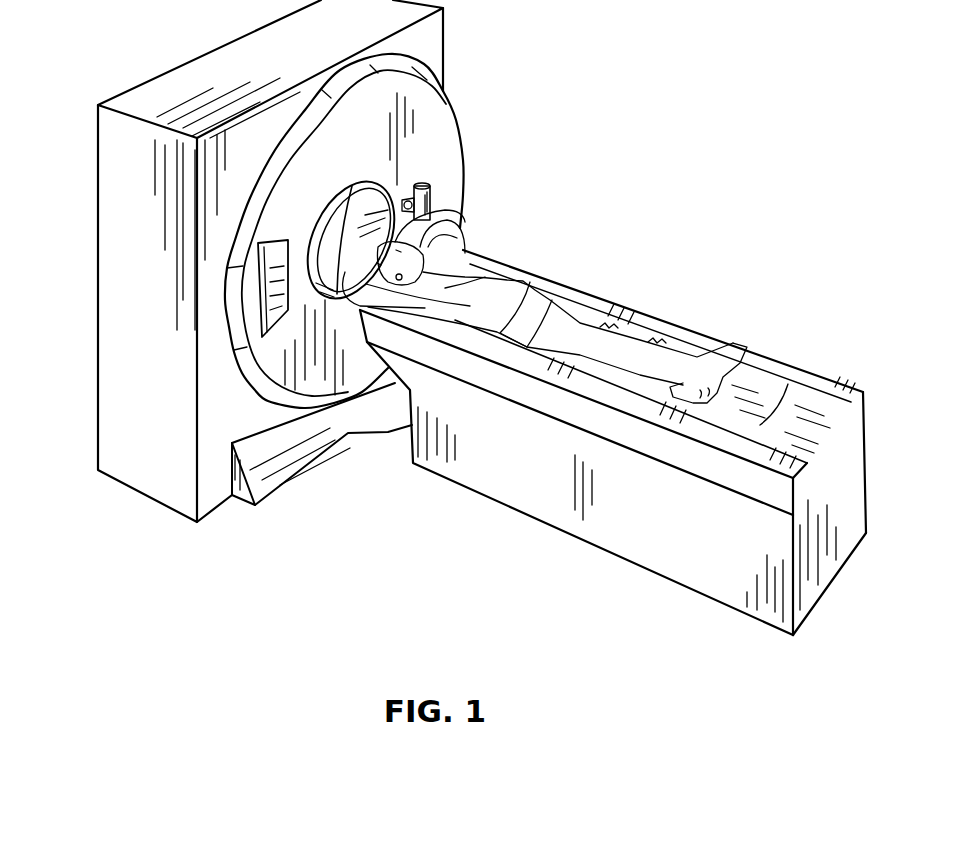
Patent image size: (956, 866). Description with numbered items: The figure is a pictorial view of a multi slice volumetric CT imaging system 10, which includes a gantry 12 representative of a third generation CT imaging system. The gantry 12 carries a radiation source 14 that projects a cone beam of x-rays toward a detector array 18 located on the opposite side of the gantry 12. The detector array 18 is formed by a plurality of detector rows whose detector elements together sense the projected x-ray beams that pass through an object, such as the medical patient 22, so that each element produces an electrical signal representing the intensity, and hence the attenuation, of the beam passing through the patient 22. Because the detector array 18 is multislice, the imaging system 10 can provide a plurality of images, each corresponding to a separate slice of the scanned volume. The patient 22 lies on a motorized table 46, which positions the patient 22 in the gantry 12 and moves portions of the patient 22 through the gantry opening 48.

The CT imaging system 10 is at (389, 475).
The gantry 12 is at (270, 261).
The radiation source 14 is at (430, 200).
The detector array 18 is at (267, 330).
The patient 22 is at (490, 275).
The motorized table 46 is at (500, 478).
The gantry opening 48 is at (327, 208).